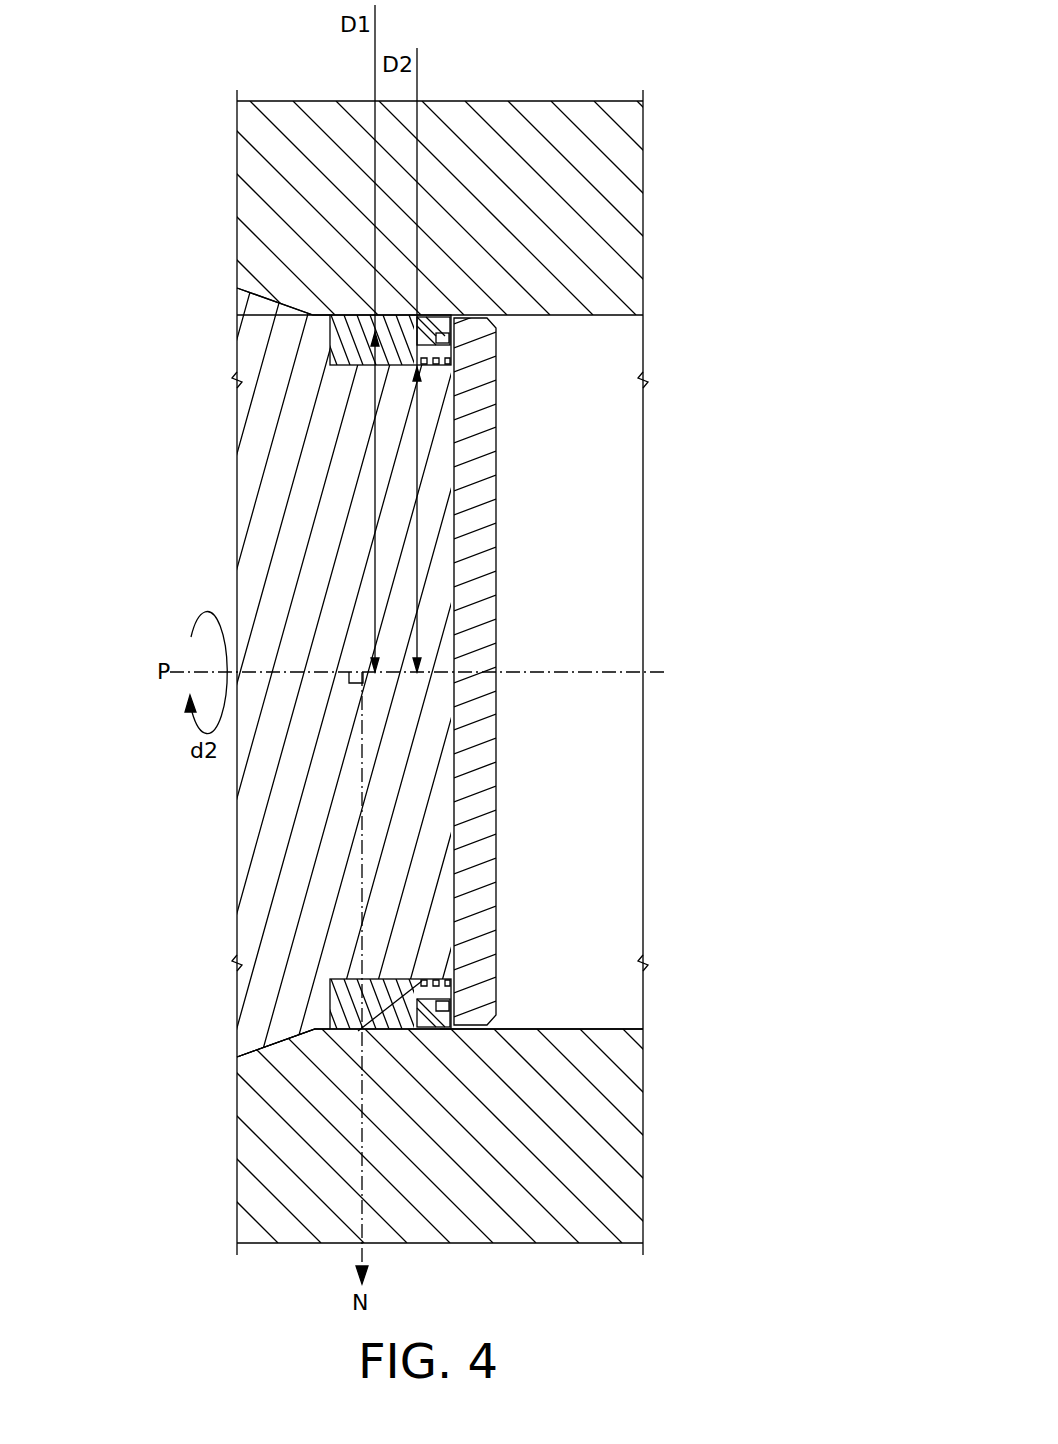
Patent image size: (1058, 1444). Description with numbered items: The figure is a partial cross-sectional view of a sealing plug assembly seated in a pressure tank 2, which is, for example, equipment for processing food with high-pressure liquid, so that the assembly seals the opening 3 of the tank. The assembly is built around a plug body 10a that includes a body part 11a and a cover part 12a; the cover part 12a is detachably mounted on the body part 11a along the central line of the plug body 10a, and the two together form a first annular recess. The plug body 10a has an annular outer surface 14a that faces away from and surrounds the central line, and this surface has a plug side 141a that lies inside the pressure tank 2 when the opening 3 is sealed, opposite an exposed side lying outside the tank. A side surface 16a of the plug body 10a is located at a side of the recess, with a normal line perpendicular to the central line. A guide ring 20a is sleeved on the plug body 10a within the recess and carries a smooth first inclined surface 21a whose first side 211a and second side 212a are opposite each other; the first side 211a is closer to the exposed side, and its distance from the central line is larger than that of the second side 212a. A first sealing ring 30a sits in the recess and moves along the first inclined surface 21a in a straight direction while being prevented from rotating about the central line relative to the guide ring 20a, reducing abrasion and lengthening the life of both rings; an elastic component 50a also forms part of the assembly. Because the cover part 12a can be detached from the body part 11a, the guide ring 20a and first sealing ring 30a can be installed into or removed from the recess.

The pressure tank 2 is at (443, 1213).
The opening 3 is at (577, 856).
The plug body 10a is at (733, 395).
The body part 11a is at (316, 571).
The cover part 12a is at (480, 452).
The annular outer surface 14a is at (282, 1042).
The side surface 16a is at (382, 984).
The guide ring 20a is at (422, 363).
The first inclined surface 21a is at (403, 337).
The first side 211a is at (380, 321).
The second side 212a is at (420, 358).
The first sealing ring 30a is at (442, 992).
The elastic component 50a is at (472, 1031).
The plug side 141a is at (443, 1030).